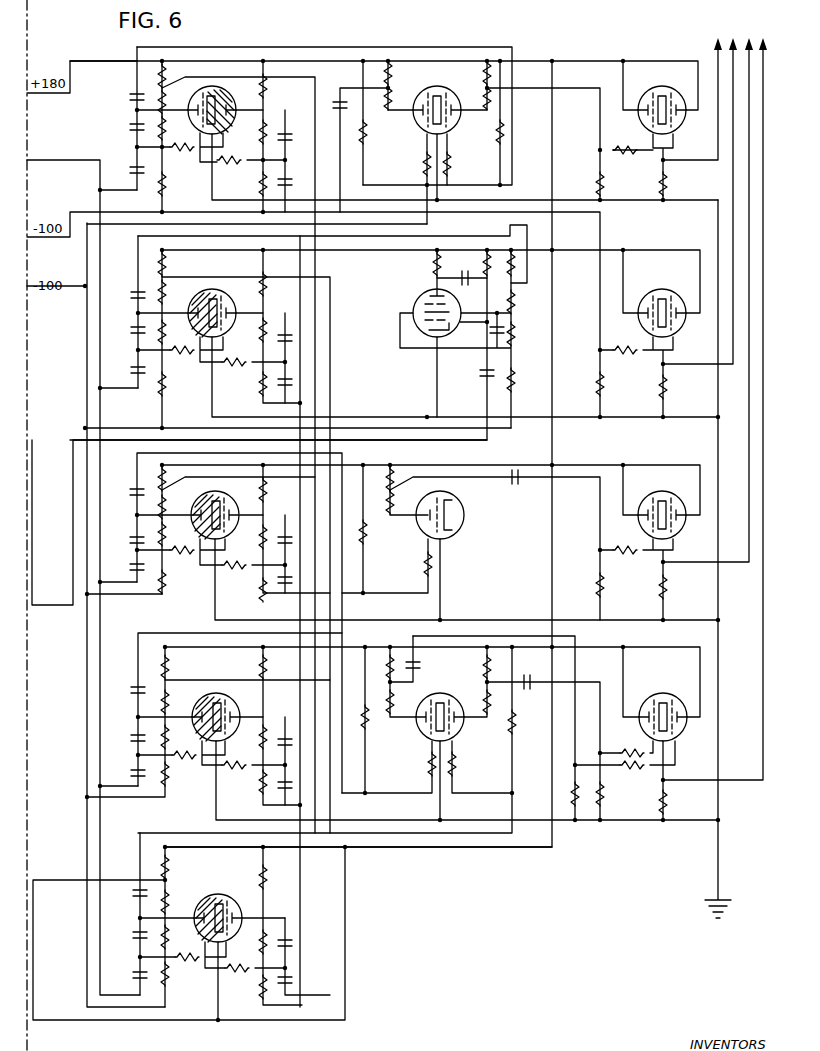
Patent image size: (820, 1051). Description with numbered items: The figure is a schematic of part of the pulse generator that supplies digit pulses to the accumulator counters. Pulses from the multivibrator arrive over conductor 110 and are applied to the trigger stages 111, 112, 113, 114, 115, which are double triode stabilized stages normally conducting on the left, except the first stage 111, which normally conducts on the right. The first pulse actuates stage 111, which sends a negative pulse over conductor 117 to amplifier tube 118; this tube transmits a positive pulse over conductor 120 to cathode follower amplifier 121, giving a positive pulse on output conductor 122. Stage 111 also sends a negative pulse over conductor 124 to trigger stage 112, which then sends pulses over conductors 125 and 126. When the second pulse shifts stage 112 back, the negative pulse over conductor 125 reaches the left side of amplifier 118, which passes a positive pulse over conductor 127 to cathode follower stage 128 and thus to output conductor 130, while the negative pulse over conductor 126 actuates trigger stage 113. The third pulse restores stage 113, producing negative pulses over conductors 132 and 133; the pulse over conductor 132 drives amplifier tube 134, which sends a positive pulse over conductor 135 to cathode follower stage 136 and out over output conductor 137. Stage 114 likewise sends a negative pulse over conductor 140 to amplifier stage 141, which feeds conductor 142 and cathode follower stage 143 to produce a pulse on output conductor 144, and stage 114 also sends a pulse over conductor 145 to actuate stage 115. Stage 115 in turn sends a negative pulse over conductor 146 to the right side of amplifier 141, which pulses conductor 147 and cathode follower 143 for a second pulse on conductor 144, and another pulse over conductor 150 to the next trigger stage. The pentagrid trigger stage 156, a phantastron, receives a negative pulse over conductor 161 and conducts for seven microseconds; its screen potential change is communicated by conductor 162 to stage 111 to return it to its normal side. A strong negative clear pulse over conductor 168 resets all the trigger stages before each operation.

The conductor 110 is at (60, 153).
The first trigger stage 111 is at (244, 91).
The trigger stage 112 is at (230, 305).
The trigger stage 113 is at (240, 505).
The trigger stage 114 is at (240, 707).
The trigger stage 115 is at (220, 895).
The conductor 117 is at (235, 47).
The amplifier tube 118 is at (446, 94).
The conductor 120 is at (560, 89).
The cathode follower amplifier 121 is at (652, 98).
The output conductor 122 is at (718, 126).
The conductor 124 is at (238, 455).
The conductor 125 is at (137, 290).
The conductor 126 is at (190, 277).
The conductor 127 is at (345, 175).
The cathode follower stage 128 is at (662, 294).
The output conductor 130 is at (733, 176).
The conductor 132 is at (137, 455).
The conductor 133 is at (213, 478).
The amplifier tube 134 is at (455, 512).
The conductor 135 is at (556, 479).
The cathode follower stage 136 is at (665, 495).
The output conductor 137 is at (752, 136).
The conductor 140 is at (138, 665).
The amplifier stage 141 is at (432, 693).
The conductor 142 is at (575, 640).
The cathode follower stage 143 is at (663, 695).
The output conductor 144 is at (764, 205).
The conductor 145 is at (190, 680).
The conductor 146 is at (172, 833).
The conductor 147 is at (590, 682).
The conductor 150 is at (72, 880).
The pentagrid trigger stage 156 is at (426, 300).
The conductor 161 is at (486, 396).
The conductor 162 is at (508, 228).
The conductor 168 is at (87, 222).